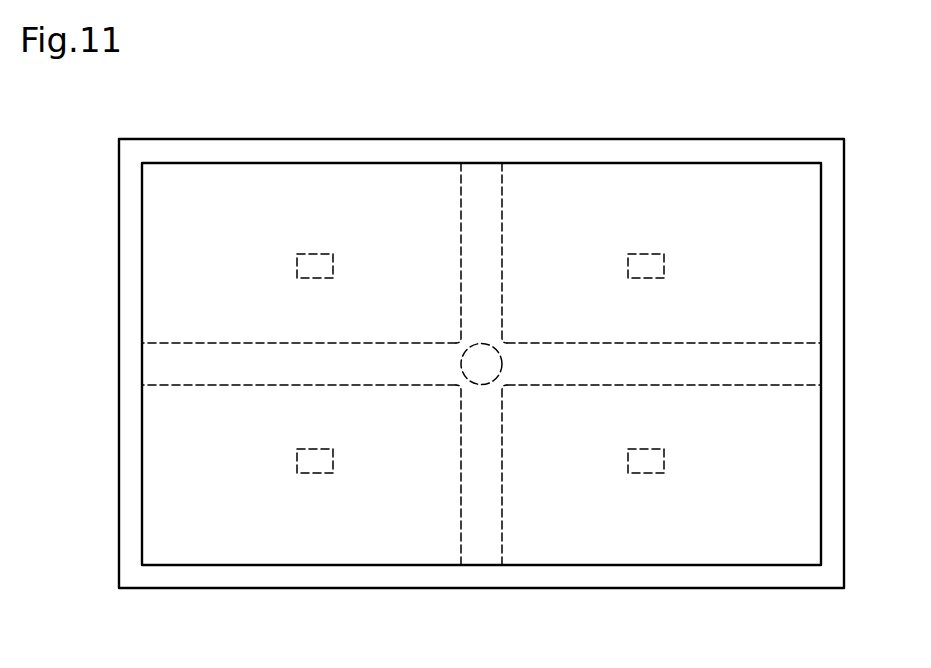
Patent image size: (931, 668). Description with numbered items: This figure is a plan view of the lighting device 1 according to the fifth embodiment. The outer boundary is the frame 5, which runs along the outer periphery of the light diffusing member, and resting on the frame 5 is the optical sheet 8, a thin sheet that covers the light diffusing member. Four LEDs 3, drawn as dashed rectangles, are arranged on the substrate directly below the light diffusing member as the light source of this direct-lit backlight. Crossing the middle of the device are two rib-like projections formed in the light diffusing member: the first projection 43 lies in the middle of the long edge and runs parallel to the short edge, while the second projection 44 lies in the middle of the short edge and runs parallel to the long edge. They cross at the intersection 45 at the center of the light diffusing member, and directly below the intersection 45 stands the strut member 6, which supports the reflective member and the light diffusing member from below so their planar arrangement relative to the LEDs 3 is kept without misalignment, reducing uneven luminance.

The lighting device 1 is at (112, 171).
The frame 5 is at (245, 152).
The optical sheet 8 is at (607, 183).
The LEDs 3 is at (297, 265).
The strut member 6 is at (461, 364).
The first projection 43 is at (488, 526).
The second projection 44 is at (756, 355).
The intersection 45 is at (500, 345).